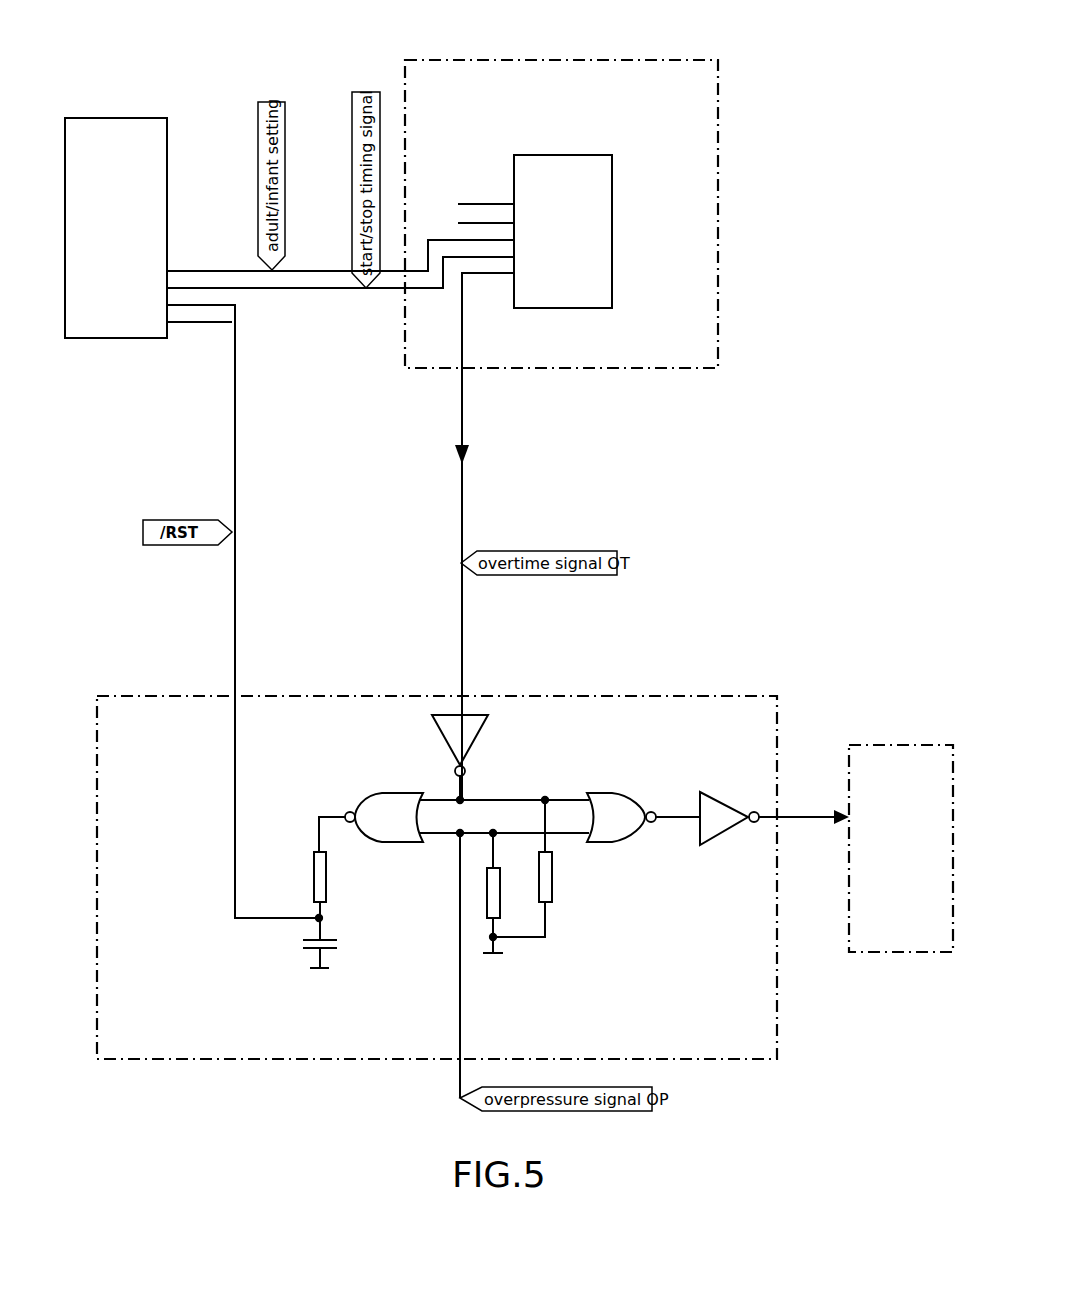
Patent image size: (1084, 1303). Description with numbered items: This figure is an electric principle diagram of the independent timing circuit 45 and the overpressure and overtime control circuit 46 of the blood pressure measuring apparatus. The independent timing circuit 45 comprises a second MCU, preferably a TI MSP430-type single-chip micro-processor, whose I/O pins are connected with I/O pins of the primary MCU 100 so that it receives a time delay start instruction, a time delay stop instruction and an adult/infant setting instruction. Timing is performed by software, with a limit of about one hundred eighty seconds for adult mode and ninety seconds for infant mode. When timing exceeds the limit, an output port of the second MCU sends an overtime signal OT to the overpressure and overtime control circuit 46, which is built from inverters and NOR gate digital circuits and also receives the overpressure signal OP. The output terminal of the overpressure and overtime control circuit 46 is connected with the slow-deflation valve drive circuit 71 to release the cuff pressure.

The primary MCU 100 is at (146, 127).
The independent timing circuit 45 is at (567, 252).
The overpressure and overtime control circuit 46 is at (437, 897).
The slow-deflation valve drive circuit 71 is at (901, 848).